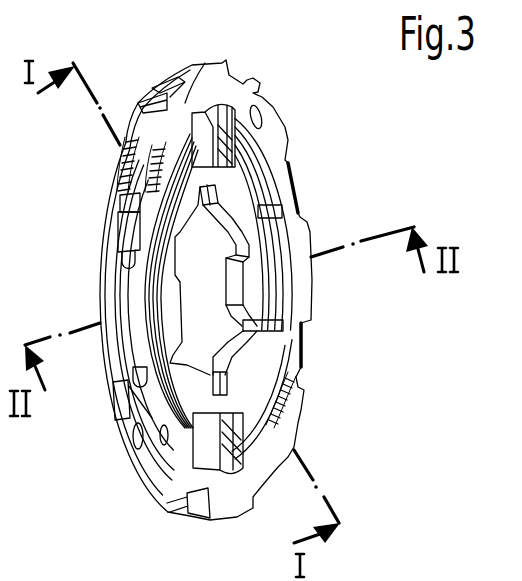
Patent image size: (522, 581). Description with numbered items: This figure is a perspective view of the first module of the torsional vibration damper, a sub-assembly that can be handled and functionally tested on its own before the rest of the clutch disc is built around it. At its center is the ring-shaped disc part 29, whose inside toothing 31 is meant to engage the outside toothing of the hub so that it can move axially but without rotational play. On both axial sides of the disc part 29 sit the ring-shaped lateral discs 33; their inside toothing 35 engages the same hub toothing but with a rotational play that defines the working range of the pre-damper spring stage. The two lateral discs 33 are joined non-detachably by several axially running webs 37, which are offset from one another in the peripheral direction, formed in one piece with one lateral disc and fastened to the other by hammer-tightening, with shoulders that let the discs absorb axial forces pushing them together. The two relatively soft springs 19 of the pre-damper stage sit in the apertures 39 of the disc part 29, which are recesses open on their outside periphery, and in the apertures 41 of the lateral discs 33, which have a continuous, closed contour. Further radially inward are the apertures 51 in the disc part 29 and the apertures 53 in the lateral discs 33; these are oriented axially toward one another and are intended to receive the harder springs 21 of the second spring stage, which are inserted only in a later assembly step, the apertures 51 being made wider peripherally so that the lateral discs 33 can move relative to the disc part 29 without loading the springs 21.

The springs 19 is at (128, 168).
The springs 21 is at (456, 572).
The disc part 29 is at (118, 300).
The inside toothing 31 is at (252, 324).
The lateral discs 33 is at (133, 103).
The inside toothing 35 is at (250, 340).
The webs 37 is at (170, 70).
The apertures 39 is at (130, 193).
The apertures 41 is at (150, 207).
The apertures 51 is at (212, 140).
The apertures 53 is at (238, 105).